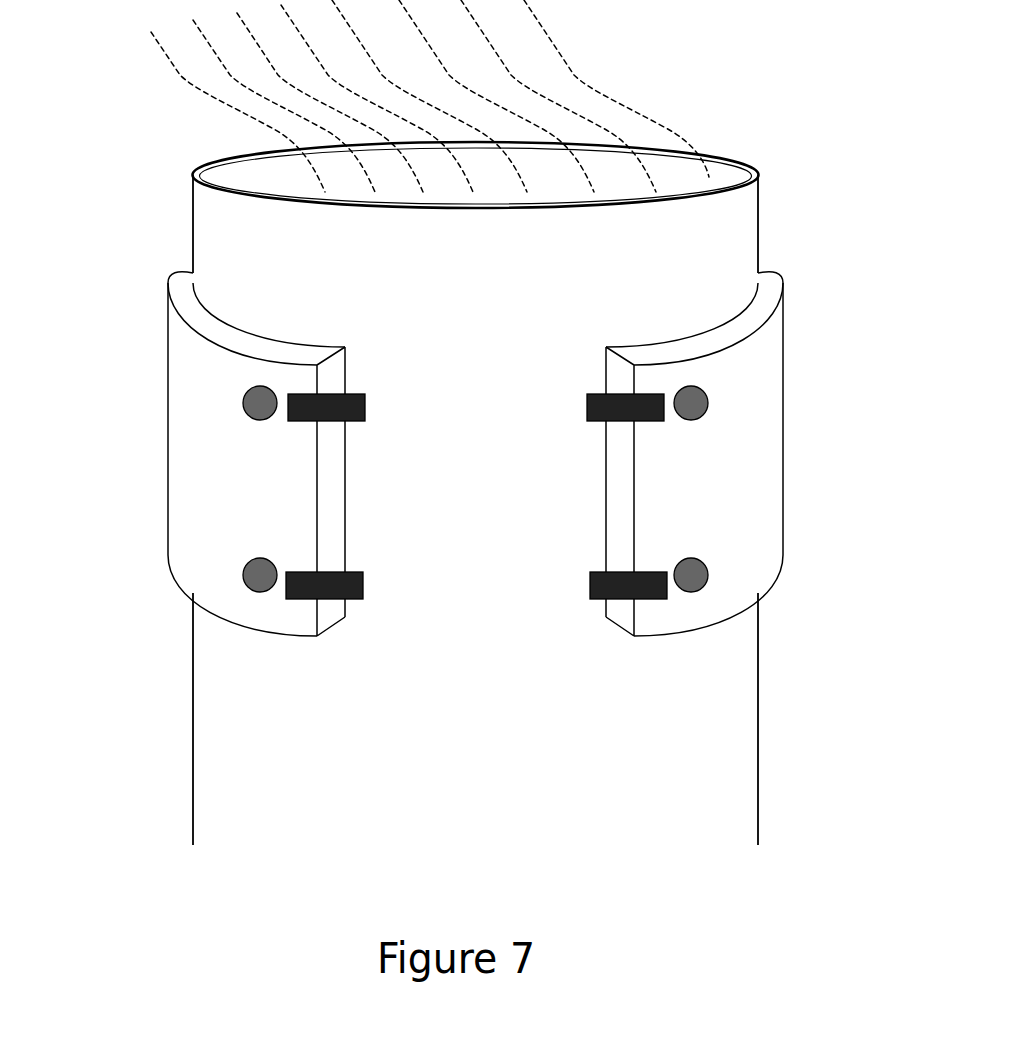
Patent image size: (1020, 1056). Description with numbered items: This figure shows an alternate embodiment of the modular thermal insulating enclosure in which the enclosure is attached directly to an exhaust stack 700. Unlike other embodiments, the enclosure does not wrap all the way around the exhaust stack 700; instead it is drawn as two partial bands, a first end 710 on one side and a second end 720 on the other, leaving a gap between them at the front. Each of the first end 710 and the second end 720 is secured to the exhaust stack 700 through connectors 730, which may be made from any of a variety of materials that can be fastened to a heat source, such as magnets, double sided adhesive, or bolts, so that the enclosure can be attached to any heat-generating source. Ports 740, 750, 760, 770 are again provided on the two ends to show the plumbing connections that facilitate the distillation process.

The exhaust stack 700 is at (760, 234).
The first end 710 is at (222, 624).
The second end 720 is at (722, 627).
The connectors 730 is at (578, 403).
The port 740 is at (220, 565).
The port 750 is at (725, 565).
The port 760 is at (220, 394).
The port 770 is at (730, 395).